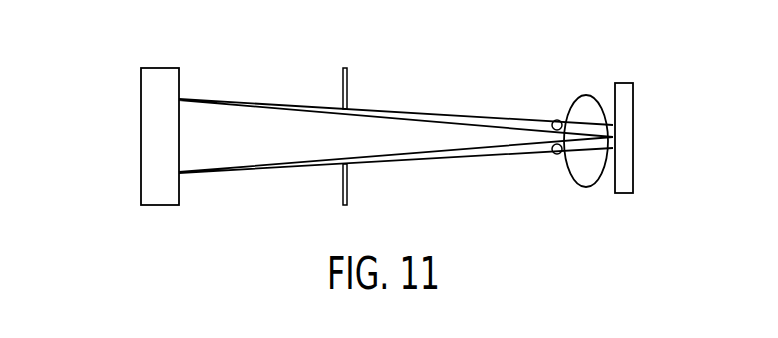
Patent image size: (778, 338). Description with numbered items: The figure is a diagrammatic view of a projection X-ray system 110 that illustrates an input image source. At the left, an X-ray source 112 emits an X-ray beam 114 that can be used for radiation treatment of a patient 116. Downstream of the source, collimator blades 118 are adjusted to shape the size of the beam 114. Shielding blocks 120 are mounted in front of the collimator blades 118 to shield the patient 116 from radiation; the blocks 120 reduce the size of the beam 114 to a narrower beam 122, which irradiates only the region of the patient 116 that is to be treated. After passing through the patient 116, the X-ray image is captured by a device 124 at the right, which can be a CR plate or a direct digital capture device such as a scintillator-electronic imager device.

The projection X-ray system 110 is at (113, 223).
The X-ray source 112 is at (180, 80).
The X-ray beam 114 is at (403, 110).
The patient 116 is at (587, 95).
The collimator blades 118 is at (348, 82).
The shielding blocks 120 is at (553, 121).
The beam 122 is at (312, 165).
The capture device 124 is at (633, 107).